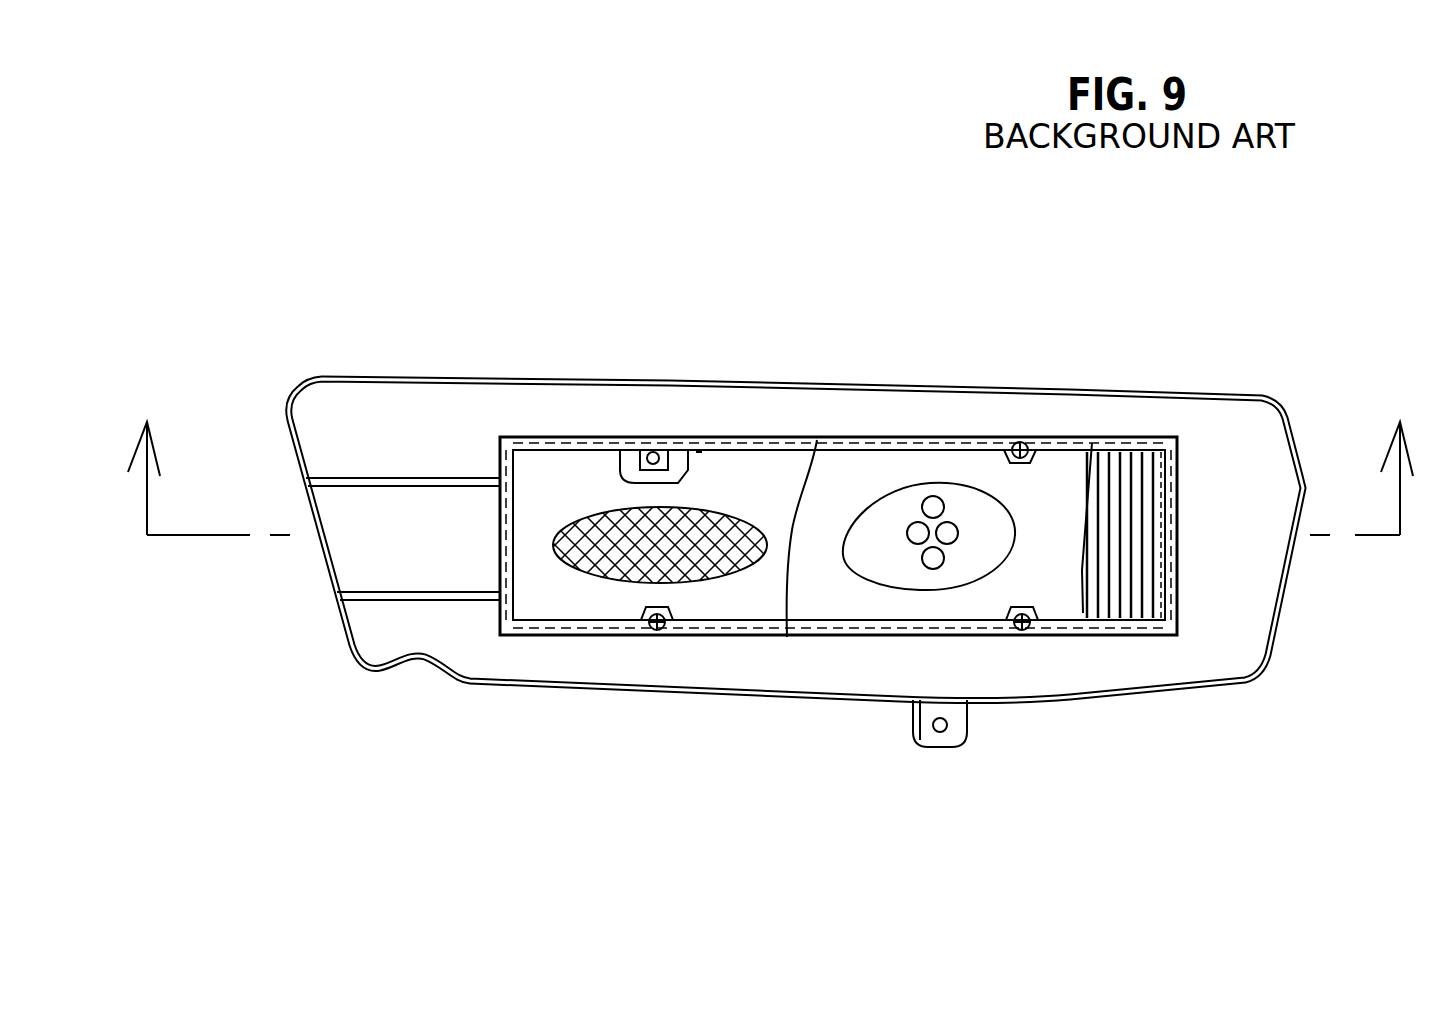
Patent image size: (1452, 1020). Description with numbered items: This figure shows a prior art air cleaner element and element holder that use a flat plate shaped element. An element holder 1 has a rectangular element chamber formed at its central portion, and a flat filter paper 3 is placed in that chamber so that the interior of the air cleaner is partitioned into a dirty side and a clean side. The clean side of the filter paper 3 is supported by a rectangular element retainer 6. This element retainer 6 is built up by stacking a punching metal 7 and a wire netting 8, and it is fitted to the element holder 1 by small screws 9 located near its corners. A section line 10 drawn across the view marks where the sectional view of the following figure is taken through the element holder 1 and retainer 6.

The element holder 1 is at (577, 323).
The filter paper 3 is at (1135, 472).
The element retainer 6 is at (927, 400).
The punching metal 7 is at (1070, 477).
The wire netting 8 is at (711, 510).
The small screws 9 is at (1022, 442).
The line 10— 10 is at (777, 440).